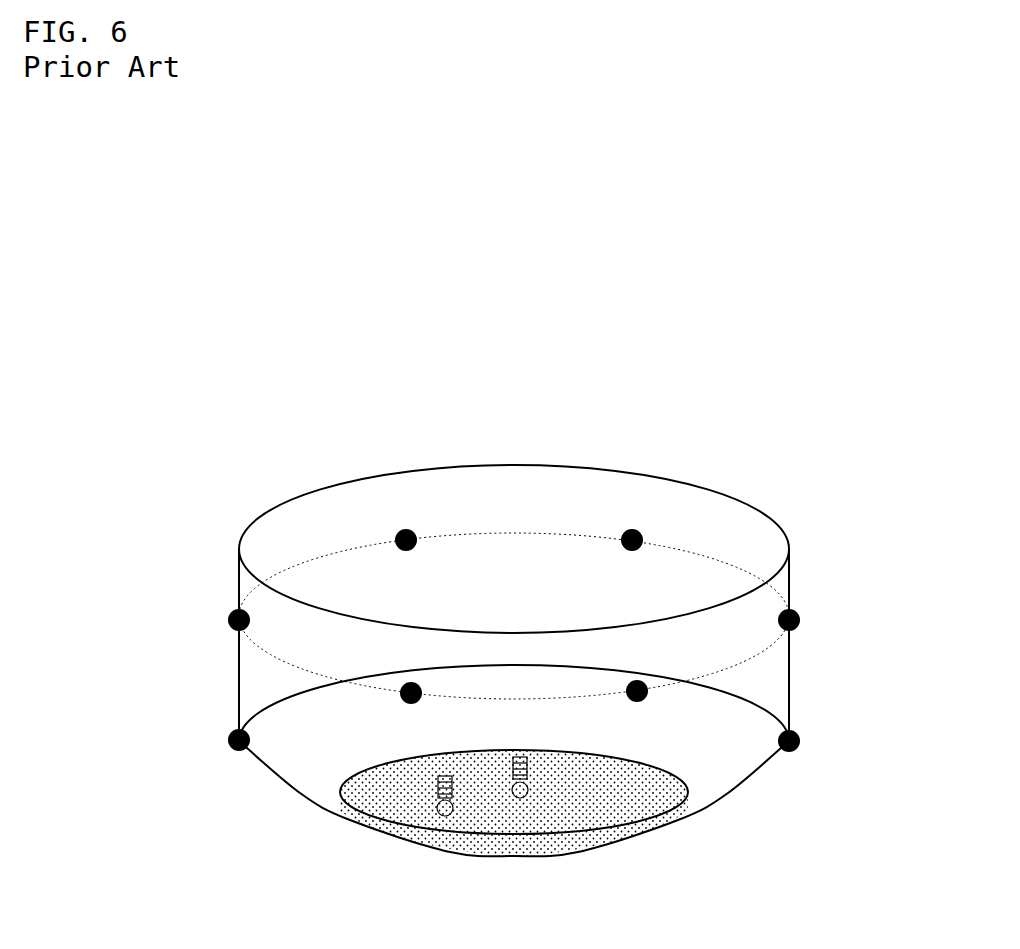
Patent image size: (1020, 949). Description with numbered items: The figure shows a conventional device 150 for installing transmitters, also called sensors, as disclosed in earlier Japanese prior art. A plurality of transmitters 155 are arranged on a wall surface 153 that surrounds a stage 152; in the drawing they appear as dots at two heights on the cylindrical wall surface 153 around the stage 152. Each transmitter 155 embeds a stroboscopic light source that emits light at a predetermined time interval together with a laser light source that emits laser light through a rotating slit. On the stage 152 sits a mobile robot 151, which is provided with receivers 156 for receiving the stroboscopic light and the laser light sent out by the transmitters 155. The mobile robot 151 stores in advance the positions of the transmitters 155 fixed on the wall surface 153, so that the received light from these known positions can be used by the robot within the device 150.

The device 150 is at (160, 361).
The mobile robot 151 is at (437, 803).
The stage 152 is at (492, 858).
The wall surface 153 is at (793, 574).
The transmitter 155 is at (406, 530).
The receiver 156 is at (440, 772).